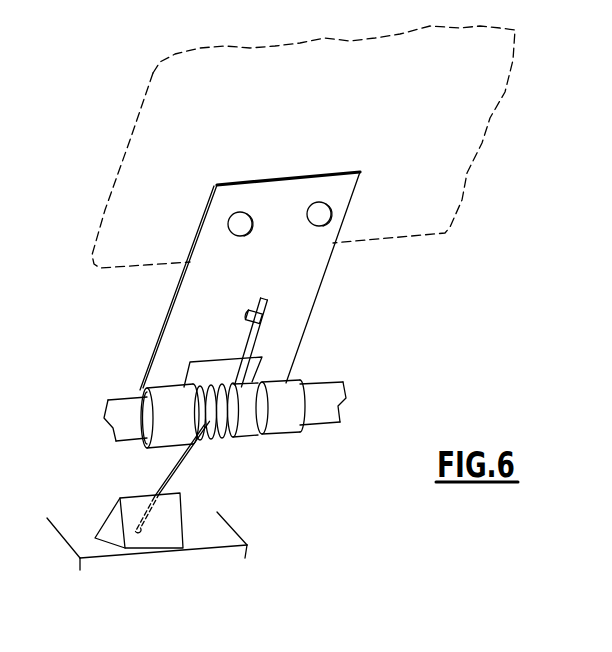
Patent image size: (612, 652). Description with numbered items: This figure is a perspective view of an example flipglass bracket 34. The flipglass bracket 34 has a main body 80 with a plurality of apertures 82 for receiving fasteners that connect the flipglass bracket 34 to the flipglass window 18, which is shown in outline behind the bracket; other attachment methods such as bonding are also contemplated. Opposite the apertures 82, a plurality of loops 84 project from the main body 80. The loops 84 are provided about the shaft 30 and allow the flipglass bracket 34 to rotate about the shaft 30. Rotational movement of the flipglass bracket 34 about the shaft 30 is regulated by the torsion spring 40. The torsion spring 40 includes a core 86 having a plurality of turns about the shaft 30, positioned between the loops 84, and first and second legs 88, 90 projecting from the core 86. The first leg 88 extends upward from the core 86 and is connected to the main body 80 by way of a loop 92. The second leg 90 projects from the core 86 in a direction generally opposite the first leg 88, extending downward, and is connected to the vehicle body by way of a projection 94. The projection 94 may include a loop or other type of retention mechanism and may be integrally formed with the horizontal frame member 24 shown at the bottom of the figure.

The flipglass window 18 is at (298, 106).
The horizontal frame member 24 is at (243, 549).
The shaft 30 is at (330, 400).
The flipglass bracket 34 is at (347, 283).
The torsion spring 40 is at (256, 341).
The main body 80 is at (186, 315).
The apertures 82 is at (248, 211).
The loops 84 is at (178, 410).
The core 86 is at (233, 418).
The first leg 88 is at (255, 330).
The second leg 90 is at (187, 462).
The loop 92 is at (249, 316).
The projection 94 is at (160, 532).